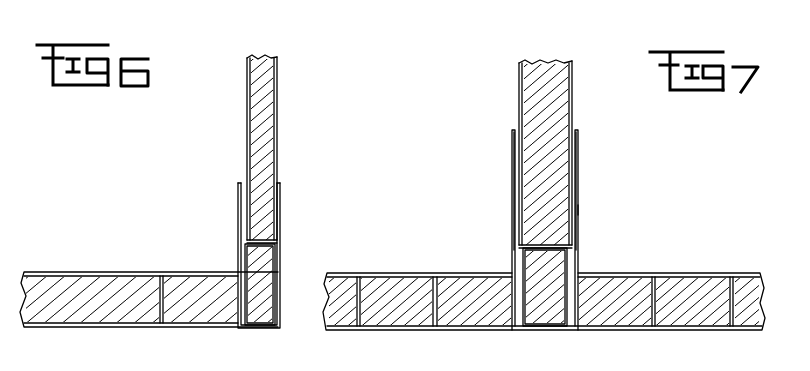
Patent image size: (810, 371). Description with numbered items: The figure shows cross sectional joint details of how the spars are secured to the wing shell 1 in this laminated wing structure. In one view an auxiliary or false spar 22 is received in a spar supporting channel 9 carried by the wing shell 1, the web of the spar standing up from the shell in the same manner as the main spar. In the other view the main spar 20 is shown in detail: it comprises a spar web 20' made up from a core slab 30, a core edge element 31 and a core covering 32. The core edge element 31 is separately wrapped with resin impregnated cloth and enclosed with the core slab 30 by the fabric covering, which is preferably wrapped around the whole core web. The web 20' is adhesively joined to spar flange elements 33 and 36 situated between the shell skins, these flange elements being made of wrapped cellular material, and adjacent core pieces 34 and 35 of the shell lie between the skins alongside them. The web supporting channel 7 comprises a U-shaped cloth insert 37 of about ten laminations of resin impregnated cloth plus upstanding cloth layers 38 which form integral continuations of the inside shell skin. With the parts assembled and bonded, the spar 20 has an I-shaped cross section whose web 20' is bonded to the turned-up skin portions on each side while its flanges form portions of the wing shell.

In FIG. 6, the wing shell 1 is at (58, 270).
In FIG. 6, the auxiliary spar 22 is at (278, 133).
In FIG. 6, the spar supporting channel 9 is at (282, 218).
In FIG. 7, the main spar 20 is at (526, 134).
In FIG. 7, the core slab 30 is at (548, 63).
In FIG. 7, the core covering 32 is at (521, 102).
In FIG. 7, the spar web 20' is at (594, 154).
In FIG. 7, the spar supporting channel 7 is at (512, 175).
In FIG. 7, the upstanding cloth layers 38 is at (580, 173).
In FIG. 7, the U-shaped cloth insert 37 is at (576, 212).
In FIG. 7, the core edge element 31 is at (577, 258).
In FIG. 7, the spar flange element 33 is at (372, 331).
In FIG. 7, the panel 34 is at (455, 331).
In FIG. 7, the panel 35 is at (608, 333).
In FIG. 7, the spar flange element 36 is at (678, 333).